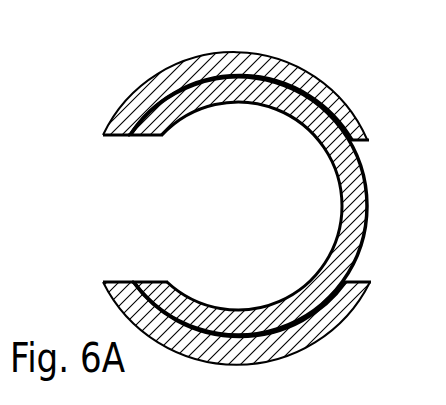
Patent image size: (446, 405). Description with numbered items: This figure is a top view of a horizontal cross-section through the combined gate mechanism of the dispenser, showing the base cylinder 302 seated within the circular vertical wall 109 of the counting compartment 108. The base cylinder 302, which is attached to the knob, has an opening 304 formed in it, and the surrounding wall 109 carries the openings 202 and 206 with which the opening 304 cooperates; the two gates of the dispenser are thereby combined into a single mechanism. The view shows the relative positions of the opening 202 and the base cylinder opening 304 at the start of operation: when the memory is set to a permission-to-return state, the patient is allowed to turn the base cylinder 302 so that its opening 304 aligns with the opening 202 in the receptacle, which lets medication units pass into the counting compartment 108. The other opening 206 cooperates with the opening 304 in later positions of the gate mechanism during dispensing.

The circular vertical wall 109 is at (262, 56).
The opening 202 is at (132, 136).
The opening 206 is at (370, 140).
The base cylinder 302 is at (350, 233).
The opening 304 is at (137, 282).
The counting compartment 108 is at (258, 224).